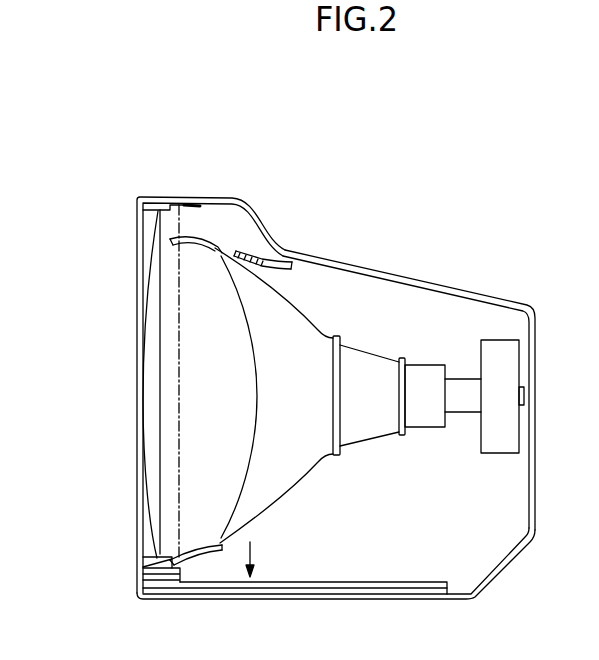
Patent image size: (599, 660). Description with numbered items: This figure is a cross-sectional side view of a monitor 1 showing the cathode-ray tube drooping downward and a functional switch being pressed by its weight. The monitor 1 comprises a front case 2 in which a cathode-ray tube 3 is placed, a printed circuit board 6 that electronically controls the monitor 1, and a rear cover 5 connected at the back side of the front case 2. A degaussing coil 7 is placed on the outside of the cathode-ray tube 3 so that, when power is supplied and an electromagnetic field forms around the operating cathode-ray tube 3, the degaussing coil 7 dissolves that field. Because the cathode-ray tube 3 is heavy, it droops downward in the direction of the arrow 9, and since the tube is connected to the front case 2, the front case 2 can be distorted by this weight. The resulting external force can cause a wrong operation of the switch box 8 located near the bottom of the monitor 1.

The monitor 1 is at (46, 128).
The front case 2 is at (157, 197).
The cathode-ray tube 3 is at (190, 237).
The rear cover 5 is at (383, 268).
The printed circuit board 6 is at (217, 586).
The degaussing coil 7 is at (218, 293).
The switch box 8 is at (142, 572).
The arrow 9 is at (255, 557).